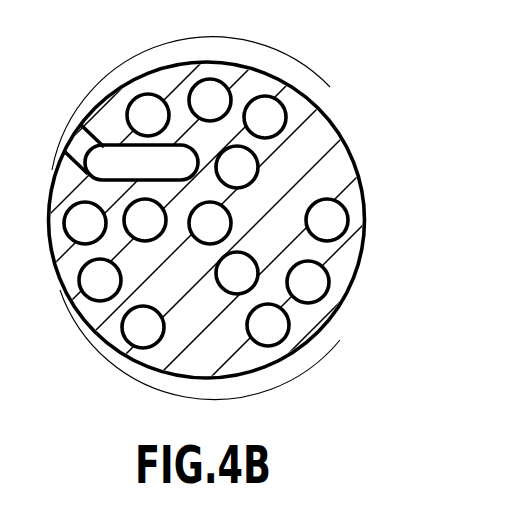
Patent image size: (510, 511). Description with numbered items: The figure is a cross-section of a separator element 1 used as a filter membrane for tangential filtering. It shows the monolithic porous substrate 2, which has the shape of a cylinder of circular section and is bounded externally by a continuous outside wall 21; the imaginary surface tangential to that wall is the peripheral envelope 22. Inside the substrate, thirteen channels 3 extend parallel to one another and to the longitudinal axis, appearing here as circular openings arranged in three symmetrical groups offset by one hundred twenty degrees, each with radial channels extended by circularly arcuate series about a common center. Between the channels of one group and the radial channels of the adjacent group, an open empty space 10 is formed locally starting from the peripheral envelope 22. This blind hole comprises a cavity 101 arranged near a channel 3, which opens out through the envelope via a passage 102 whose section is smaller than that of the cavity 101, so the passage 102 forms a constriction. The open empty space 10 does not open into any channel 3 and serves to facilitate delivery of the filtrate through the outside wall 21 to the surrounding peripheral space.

The separator element 1 is at (255, 255).
The porous substrate 2 is at (207, 208).
The outside wall 21 is at (180, 345).
The peripheral envelope 22 is at (153, 67).
The channel 3 is at (268, 325).
The open empty space 10 is at (99, 134).
The cavity 101 is at (105, 164).
The passage 102 is at (81, 124).